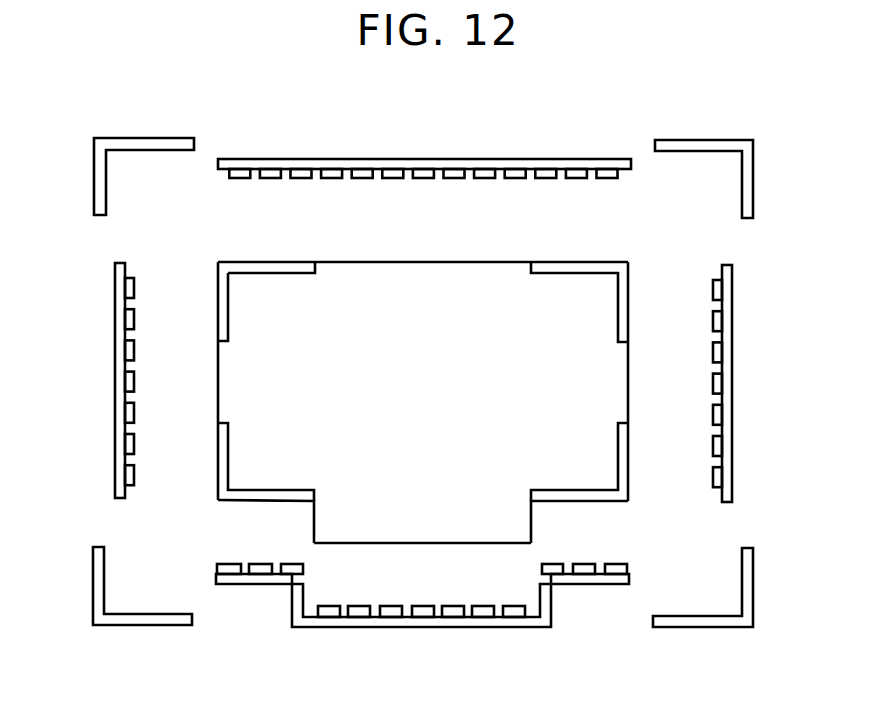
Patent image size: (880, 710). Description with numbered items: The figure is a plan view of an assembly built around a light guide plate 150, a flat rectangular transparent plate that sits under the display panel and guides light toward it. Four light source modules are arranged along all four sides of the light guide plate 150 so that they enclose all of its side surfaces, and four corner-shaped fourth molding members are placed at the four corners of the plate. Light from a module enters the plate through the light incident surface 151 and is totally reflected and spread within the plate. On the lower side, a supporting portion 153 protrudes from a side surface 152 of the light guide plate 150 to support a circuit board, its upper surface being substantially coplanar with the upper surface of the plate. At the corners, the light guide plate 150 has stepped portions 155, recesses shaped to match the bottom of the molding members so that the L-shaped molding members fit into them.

The light guide plate 150 is at (414, 270).
The light incident surface 151 is at (631, 382).
The side surface 152 is at (593, 505).
The supporting portion 153 is at (418, 543).
The stepped portion 155 is at (222, 447).